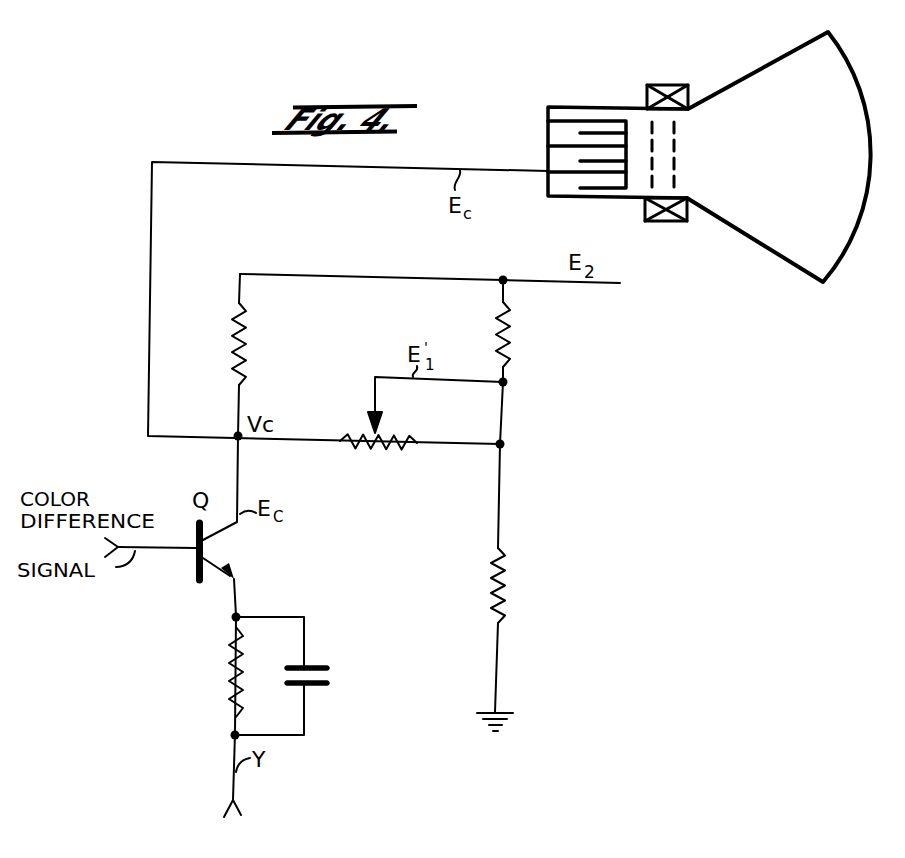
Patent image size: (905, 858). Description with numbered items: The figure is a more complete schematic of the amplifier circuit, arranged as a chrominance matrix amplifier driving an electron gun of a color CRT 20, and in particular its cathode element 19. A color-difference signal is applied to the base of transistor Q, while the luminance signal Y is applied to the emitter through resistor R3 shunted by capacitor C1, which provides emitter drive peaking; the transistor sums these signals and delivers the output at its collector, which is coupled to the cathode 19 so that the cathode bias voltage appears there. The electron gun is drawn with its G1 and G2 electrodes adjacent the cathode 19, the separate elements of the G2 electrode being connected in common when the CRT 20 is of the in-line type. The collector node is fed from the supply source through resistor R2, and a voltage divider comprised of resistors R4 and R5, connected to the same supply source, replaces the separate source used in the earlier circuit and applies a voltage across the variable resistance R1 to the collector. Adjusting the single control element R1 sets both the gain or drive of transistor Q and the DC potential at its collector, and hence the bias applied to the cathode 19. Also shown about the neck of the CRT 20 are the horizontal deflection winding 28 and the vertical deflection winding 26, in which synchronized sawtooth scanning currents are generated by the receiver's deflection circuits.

The cathode element 19 is at (569, 115).
The color CRT 20 is at (779, 57).
The vertical deflection winding 26 is at (675, 222).
The horizontal deflection winding 28 is at (665, 85).
The G1 electrode G1 is at (687, 155).
The G2 electrode G2 is at (675, 163).
The variable resistance R1 is at (378, 461).
The resistor R2 is at (256, 344).
The resistor R3 is at (213, 672).
The resistor R4 is at (522, 334).
The resistor R5 is at (517, 585).
The capacitor C1 is at (317, 660).